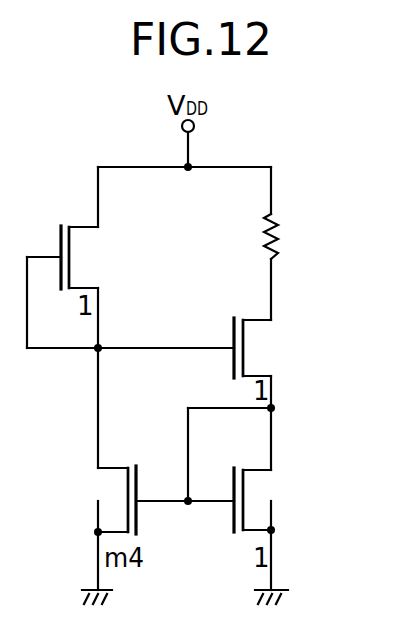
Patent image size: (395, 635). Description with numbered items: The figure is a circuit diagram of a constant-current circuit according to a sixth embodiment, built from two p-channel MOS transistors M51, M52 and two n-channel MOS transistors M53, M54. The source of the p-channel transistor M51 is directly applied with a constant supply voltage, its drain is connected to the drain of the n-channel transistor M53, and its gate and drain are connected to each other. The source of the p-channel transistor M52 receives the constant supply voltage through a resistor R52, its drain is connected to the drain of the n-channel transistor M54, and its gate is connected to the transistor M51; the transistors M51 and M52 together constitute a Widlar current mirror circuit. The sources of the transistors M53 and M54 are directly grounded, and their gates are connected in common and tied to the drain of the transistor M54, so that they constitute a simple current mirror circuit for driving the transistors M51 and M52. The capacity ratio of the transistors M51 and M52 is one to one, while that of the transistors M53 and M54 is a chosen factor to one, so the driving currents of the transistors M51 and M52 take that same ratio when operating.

The p-channel MOS transistor M51 is at (69, 257).
The p-channel MOS transistor M52 is at (243, 349).
The n-channel MOS transistor M53 is at (118, 501).
The n-channel MOS transistor M54 is at (254, 501).
The resistor R52 is at (293, 243).